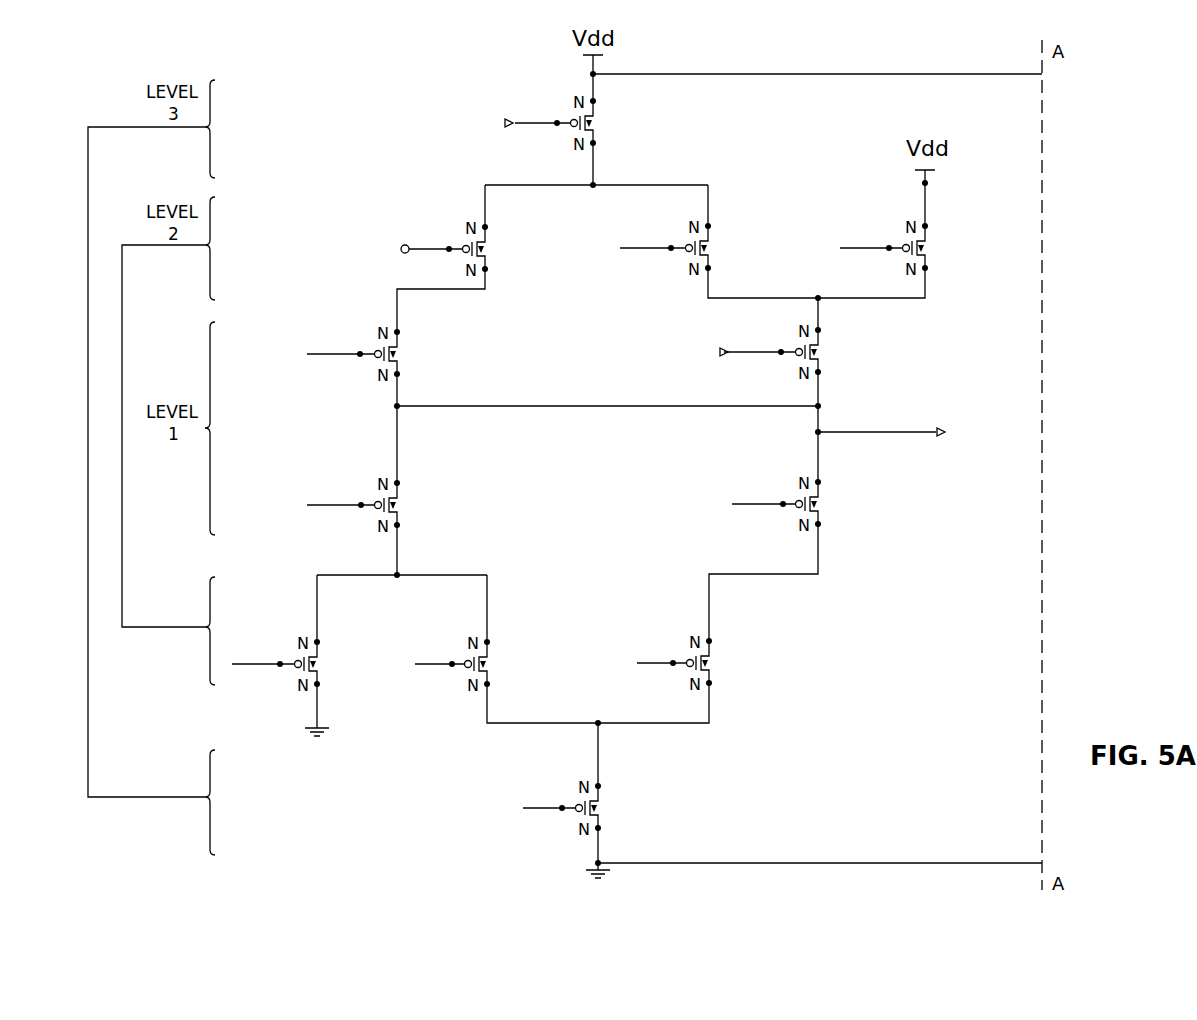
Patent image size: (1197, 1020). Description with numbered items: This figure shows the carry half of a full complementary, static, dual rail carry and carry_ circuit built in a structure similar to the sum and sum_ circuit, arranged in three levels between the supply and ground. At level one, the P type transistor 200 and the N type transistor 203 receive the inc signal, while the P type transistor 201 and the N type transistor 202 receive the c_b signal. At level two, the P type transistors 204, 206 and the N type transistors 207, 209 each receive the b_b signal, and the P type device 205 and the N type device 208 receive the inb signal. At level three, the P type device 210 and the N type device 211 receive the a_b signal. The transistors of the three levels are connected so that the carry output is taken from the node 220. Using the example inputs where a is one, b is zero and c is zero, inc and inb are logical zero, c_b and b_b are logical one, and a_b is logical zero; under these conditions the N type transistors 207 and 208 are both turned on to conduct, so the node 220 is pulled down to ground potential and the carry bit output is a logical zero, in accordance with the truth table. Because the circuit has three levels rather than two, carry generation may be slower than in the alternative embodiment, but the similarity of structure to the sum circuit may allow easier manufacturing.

The P type transistor 200 is at (372, 322).
The P type transistor 201 is at (825, 352).
The N type transistor 202 is at (373, 473).
The N type transistor 203 is at (791, 473).
The P type transistor 204 is at (458, 232).
The P type device 205 is at (681, 232).
The P type transistor 206 is at (896, 217).
The N type transistor 207 is at (290, 630).
The N type device 208 is at (460, 630).
The N type transistor 209 is at (683, 630).
The P type device 210 is at (566, 92).
The N type device 211 is at (570, 776).
The node 220 is at (889, 435).